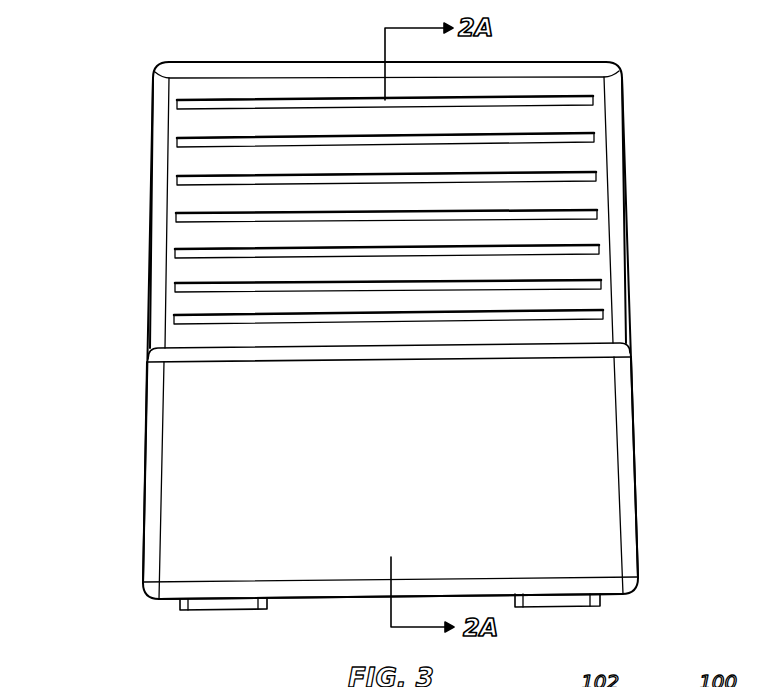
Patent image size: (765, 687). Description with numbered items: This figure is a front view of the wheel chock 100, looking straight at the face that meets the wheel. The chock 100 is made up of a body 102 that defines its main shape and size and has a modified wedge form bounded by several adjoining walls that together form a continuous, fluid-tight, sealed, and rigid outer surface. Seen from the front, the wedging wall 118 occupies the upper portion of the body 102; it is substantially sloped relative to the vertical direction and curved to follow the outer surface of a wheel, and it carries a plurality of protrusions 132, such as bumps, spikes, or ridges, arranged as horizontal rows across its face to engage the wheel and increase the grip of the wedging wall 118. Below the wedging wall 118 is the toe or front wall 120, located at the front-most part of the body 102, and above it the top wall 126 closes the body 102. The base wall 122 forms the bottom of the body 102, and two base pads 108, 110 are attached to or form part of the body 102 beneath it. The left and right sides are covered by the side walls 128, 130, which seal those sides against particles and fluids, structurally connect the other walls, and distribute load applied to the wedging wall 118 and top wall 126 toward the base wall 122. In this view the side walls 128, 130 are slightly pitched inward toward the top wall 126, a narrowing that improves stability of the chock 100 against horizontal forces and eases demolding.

The wheel chock 100 is at (118, 86).
The body 102 is at (577, 44).
The base pad 108 is at (210, 606).
The base pad 110 is at (565, 602).
The wedging wall 118 is at (191, 193).
The front wall 120 is at (163, 455).
The base wall 122 is at (293, 602).
The top wall 126 is at (213, 62).
The side wall 128 is at (145, 370).
The side wall 130 is at (630, 353).
The protrusions 132 is at (575, 140).